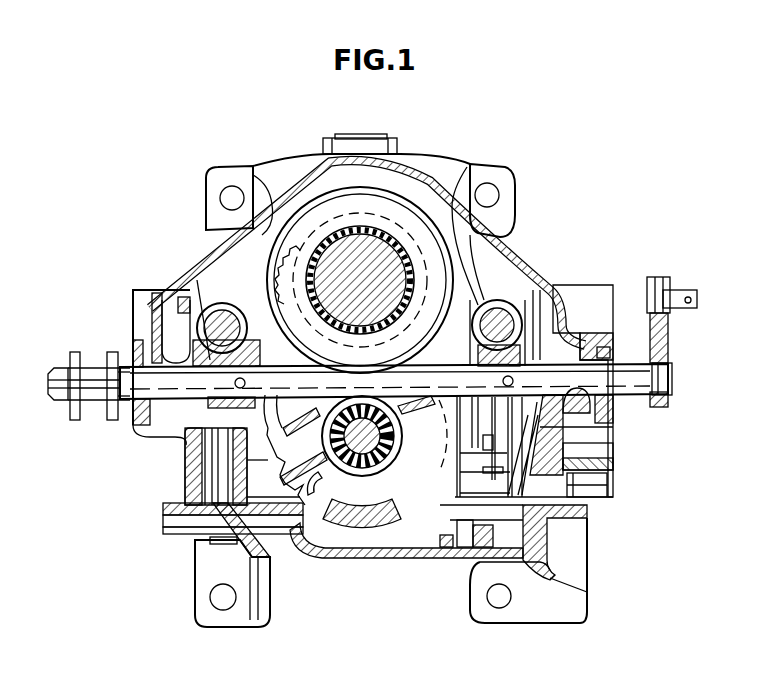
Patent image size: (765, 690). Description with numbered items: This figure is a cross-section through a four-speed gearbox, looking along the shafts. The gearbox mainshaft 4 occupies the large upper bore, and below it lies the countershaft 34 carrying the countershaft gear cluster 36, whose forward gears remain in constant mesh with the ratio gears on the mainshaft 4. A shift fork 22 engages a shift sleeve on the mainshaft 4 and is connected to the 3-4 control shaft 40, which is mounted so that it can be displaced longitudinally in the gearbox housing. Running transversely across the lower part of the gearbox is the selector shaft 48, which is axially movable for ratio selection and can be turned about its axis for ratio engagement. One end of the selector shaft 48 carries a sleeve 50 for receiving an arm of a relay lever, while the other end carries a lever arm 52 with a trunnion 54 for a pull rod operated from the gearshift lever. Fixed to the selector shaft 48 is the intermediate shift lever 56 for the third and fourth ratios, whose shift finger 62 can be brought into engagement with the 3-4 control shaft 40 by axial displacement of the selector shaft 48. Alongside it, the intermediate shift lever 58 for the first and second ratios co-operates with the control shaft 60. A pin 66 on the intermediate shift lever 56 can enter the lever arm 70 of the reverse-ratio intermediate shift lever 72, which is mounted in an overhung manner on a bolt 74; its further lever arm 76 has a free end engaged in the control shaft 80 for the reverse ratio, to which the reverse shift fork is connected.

The gearbox mainshaft 4 is at (380, 262).
The shift fork 22 is at (456, 210).
The countershaft 34 is at (360, 440).
The countershaft gear cluster 36 is at (323, 487).
The 3-4 control shaft 40 is at (515, 330).
The selector shaft 48 is at (635, 380).
The sleeve 50 is at (95, 378).
The lever arm 52 is at (668, 340).
The trunnion 54 is at (672, 292).
The intermediate shift lever 56 is at (565, 345).
The intermediate shift lever 58 is at (200, 363).
The control shaft 60 is at (218, 325).
The shift finger 62 is at (492, 305).
The pin 66 is at (457, 447).
The lever arm 70 is at (453, 477).
The intermediate shift lever 72 is at (488, 493).
The bolt 74 is at (557, 483).
The further lever arm 76 is at (565, 447).
The control shaft 80 is at (608, 423).